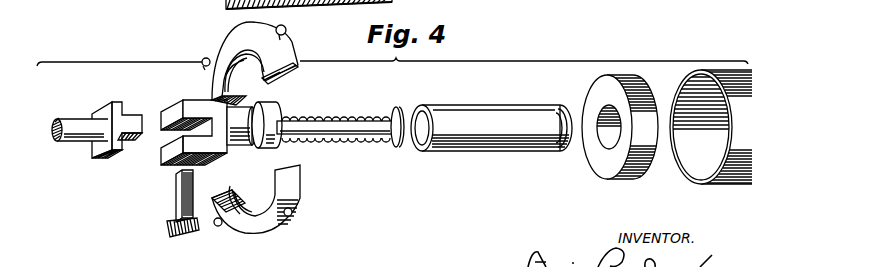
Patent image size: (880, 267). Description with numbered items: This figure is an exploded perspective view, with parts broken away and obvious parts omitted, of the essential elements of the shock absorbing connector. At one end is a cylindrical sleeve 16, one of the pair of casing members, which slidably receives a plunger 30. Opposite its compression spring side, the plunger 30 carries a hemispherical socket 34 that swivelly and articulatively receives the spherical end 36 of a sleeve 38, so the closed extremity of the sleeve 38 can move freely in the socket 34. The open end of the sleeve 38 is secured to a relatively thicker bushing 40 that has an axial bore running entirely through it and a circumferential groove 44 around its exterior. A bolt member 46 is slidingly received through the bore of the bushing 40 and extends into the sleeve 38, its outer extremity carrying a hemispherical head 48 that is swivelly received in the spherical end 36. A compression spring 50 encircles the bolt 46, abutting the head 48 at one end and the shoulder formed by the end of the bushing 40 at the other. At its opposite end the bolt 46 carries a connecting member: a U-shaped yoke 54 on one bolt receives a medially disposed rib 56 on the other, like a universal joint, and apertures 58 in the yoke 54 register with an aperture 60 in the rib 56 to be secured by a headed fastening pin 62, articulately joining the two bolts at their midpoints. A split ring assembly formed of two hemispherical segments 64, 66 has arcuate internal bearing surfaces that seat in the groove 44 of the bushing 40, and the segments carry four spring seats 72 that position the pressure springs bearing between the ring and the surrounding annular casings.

The cylindrical sleeve 16 is at (690, 79).
The plunger 30 is at (602, 88).
The socket 34 is at (613, 133).
The spherical end 36 is at (561, 108).
The sleeve 38 is at (481, 125).
The bushing 40 is at (244, 133).
The circumferential groove 44 is at (268, 118).
The bolt member 46 is at (73, 137).
The hemispherical head 48 is at (395, 108).
The compression spring 50 is at (346, 115).
The yoke 54 is at (202, 110).
The rib 56 is at (133, 116).
The apertures 58 is at (185, 156).
The aperture 60 is at (127, 141).
The fastening pin 62 is at (178, 207).
The hemispherical segment 64 is at (223, 46).
The hemispherical segment 66 is at (255, 222).
The spring seat 72 is at (203, 59).